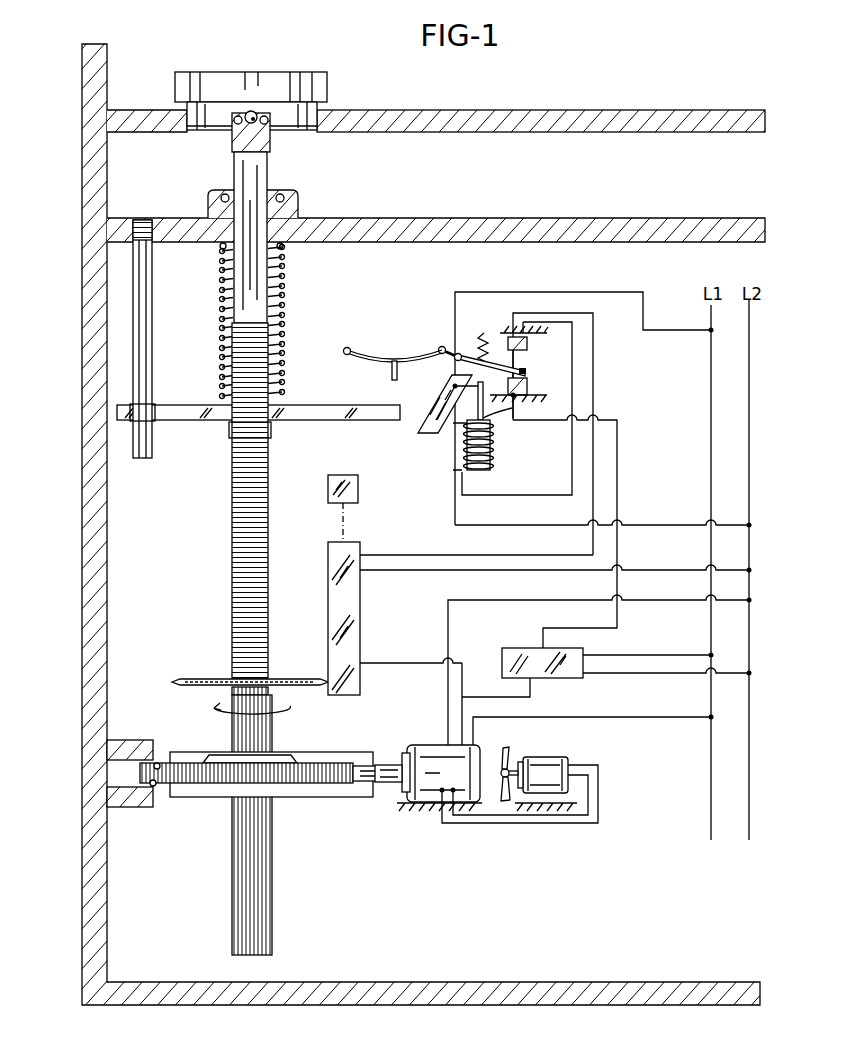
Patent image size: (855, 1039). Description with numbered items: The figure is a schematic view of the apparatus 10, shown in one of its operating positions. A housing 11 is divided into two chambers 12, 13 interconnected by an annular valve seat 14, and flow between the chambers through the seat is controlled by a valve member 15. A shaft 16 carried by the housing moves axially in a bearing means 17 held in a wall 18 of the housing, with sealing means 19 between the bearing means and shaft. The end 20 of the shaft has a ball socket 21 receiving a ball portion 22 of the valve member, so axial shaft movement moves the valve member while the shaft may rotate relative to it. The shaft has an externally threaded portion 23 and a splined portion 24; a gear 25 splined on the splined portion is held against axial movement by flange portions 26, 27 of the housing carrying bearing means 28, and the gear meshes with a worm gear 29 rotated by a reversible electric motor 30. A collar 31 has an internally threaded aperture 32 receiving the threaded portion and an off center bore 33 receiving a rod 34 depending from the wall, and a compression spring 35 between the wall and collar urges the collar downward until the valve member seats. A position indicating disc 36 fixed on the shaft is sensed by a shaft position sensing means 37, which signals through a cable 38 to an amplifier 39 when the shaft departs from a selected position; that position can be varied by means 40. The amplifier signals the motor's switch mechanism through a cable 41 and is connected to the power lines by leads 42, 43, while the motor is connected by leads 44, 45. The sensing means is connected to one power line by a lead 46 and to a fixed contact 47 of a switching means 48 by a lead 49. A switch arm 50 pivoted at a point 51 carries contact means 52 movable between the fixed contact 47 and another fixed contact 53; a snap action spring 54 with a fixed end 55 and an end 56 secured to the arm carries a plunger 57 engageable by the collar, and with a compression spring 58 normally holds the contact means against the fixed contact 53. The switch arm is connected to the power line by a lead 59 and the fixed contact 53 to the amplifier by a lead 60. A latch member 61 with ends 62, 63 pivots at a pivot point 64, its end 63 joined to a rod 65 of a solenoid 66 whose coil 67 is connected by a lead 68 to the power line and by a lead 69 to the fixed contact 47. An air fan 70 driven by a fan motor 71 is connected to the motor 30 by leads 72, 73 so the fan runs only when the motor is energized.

The apparatus 10 is at (523, 100).
The housing 11 is at (82, 300).
The chamber 12 is at (275, 87).
The chamber 13 is at (436, 203).
The annular valve seat 14 is at (325, 112).
The valve member 15 is at (212, 78).
The shaft 16 is at (268, 492).
The bearing means 17 is at (290, 215).
The wall 18 is at (372, 222).
The sealing means 19 is at (283, 192).
The end 20 is at (275, 135).
The ball socket 21 is at (236, 128).
The ball portion 22 is at (255, 110).
The externally threaded portion 23 is at (270, 532).
The splined portion 24 is at (272, 730).
The gear 25 is at (333, 760).
The flange portion 26 is at (140, 742).
The flange portion 27 is at (150, 807).
The bearing means 28 is at (157, 765).
The worm gear 29 is at (333, 797).
The reversible electric motor 30 is at (425, 745).
The collar 31 is at (305, 408).
The internally threaded aperture 32 is at (228, 440).
The off center bore 33 is at (155, 406).
The rod 34 is at (152, 336).
The compression spring 35 is at (288, 316).
The position indicating disc 36 is at (287, 678).
The shaft position sensing means 37 is at (360, 626).
The cable 38 is at (400, 661).
The amplifier 39 is at (513, 648).
The means 40 is at (358, 488).
The cable 41 is at (488, 697).
The lead 42 is at (640, 654).
The lead 43 is at (645, 674).
The lead 44 is at (590, 716).
The lead 45 is at (540, 600).
The lead 46 is at (450, 572).
The fixed contact 47 is at (530, 345).
The switching means 48 is at (458, 388).
The lead 49 is at (595, 360).
The switch arm 50 is at (472, 335).
The pivot point 51 is at (452, 358).
The contact means 52 is at (530, 371).
The fixed contact 53 is at (532, 387).
The snap action spring 54 is at (387, 360).
The end 55 is at (348, 346).
The end 56 is at (438, 349).
The plunger 57 is at (397, 380).
The compression spring 58 is at (496, 332).
The lead 59 is at (540, 292).
The lead 60 is at (619, 443).
The latch member 61 is at (452, 392).
The end 62 is at (420, 430).
The end 63 is at (500, 366).
The pivot point 64 is at (478, 420).
The rod 65 is at (517, 401).
The solenoid 66 is at (492, 466).
The coil 67 is at (492, 442).
The lead 68 is at (656, 525).
The lead 69 is at (541, 494).
The air fan 70 is at (510, 756).
The fan motor 71 is at (552, 757).
The lead 72 is at (500, 817).
The lead 73 is at (548, 825).